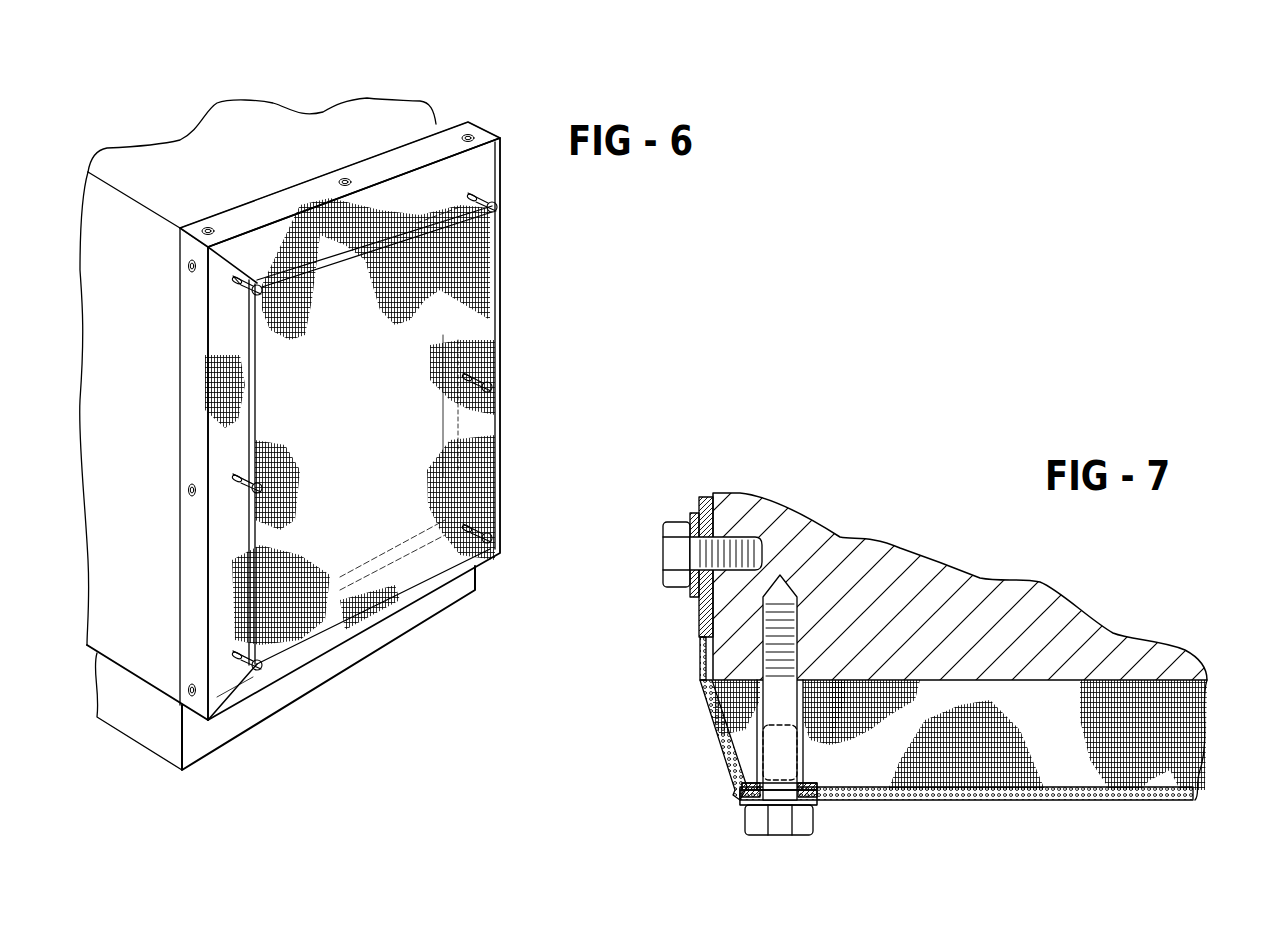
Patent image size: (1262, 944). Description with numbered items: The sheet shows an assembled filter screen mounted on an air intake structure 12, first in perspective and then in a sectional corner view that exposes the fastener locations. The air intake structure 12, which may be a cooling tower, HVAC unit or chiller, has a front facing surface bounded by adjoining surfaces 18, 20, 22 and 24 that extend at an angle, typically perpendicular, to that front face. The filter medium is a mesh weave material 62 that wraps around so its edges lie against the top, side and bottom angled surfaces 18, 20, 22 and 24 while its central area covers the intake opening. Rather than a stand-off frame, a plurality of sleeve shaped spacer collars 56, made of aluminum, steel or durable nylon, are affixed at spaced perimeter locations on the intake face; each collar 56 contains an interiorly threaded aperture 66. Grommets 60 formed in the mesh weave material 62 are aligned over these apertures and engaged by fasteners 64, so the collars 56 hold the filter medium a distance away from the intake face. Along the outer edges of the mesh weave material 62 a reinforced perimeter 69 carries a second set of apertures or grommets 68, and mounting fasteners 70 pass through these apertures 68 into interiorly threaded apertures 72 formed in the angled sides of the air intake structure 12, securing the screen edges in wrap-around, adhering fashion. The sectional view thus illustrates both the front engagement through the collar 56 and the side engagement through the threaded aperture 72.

In FIG. 6, the air intake structure 12 is at (258, 116).
In FIG. 7, the air intake structure 12 is at (835, 550).
In FIG. 6, the adjoining surface 18 is at (434, 124).
In FIG. 6, the adjoining surface 20 is at (504, 252).
In FIG. 6, the adjoining surface 22 is at (404, 620).
In FIG. 6, the adjoining surface 24 is at (100, 461).
In FIG. 6, the sleeve shaped spacer collar 56 is at (242, 474).
In FIG. 7, the grommet 60 is at (738, 802).
In FIG. 6, the mesh weave material 62 is at (372, 369).
In FIG. 7, the mesh weave material 62 is at (888, 800).
In FIG. 6, the fastener 64 is at (262, 486).
In FIG. 7, the fastener 64 is at (780, 808).
In FIG. 7, the interiorly threaded aperture 66 is at (765, 782).
In FIG. 7, the outer perimeter aperture 68 is at (690, 545).
In FIG. 6, the outer reinforced perimeter 69 is at (271, 206).
In FIG. 7, the outer reinforced perimeter 69 is at (698, 610).
In FIG. 6, the mounting fastener 70 is at (206, 229).
In FIG. 7, the mounting fastener 70 is at (663, 553).
In FIG. 7, the threaded aperture 72 is at (735, 543).